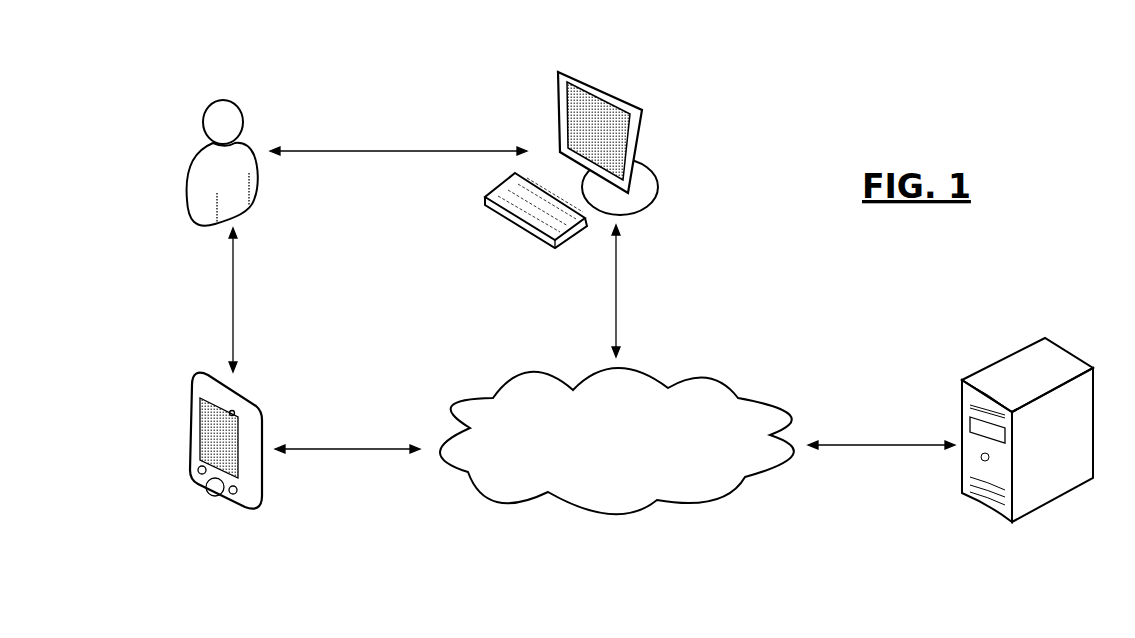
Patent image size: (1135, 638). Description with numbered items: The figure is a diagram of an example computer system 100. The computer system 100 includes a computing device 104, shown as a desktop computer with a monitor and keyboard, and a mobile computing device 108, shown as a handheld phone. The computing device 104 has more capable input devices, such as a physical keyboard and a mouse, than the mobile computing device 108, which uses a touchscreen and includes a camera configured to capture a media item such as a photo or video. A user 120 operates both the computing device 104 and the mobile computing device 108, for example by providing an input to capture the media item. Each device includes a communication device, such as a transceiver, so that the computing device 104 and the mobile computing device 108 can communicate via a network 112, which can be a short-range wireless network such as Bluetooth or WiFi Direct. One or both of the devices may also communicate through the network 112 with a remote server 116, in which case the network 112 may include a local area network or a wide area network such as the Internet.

The computer system 100 is at (758, 562).
The computing device 104 is at (608, 82).
The mobile computing device 108 is at (193, 488).
The network 112 is at (725, 383).
The remote server 116 is at (1073, 348).
The user 120 is at (212, 100).